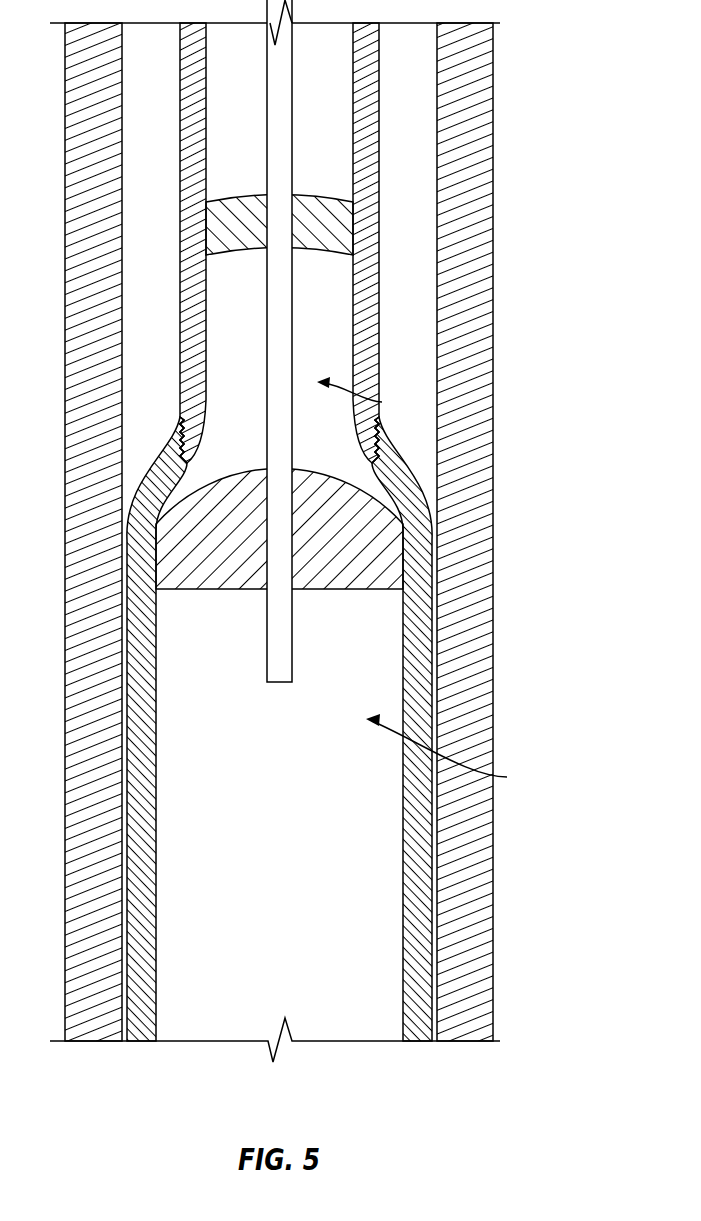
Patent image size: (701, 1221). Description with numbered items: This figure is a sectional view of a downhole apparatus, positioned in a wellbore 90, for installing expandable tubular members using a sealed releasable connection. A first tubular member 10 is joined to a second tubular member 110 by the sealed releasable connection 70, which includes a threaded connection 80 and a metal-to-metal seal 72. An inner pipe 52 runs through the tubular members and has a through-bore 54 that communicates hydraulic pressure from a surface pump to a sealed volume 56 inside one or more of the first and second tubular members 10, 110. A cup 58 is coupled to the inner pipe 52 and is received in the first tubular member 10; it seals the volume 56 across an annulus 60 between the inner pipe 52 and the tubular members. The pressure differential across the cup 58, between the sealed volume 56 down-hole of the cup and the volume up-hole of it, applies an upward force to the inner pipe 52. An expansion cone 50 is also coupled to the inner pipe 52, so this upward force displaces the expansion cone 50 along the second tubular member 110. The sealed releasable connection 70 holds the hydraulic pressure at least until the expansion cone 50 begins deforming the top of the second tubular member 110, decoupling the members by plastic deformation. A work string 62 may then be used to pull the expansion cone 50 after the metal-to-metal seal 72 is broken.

The first tubular member 10 is at (367, 125).
The expansion cone 50 is at (199, 578).
The inner pipe 52 is at (265, 275).
The through-bore 54 is at (281, 620).
The sealed volume 56 is at (430, 585).
The cup 58 is at (335, 228).
The annulus 60 is at (249, 393).
The work string 62 is at (264, 88).
The sealed releasable connection 70 is at (172, 443).
The metal-to-metal seal 72 is at (185, 463).
The threaded connection 80 is at (183, 418).
The wellbore 90 is at (435, 305).
The second tubular member 110 is at (412, 853).